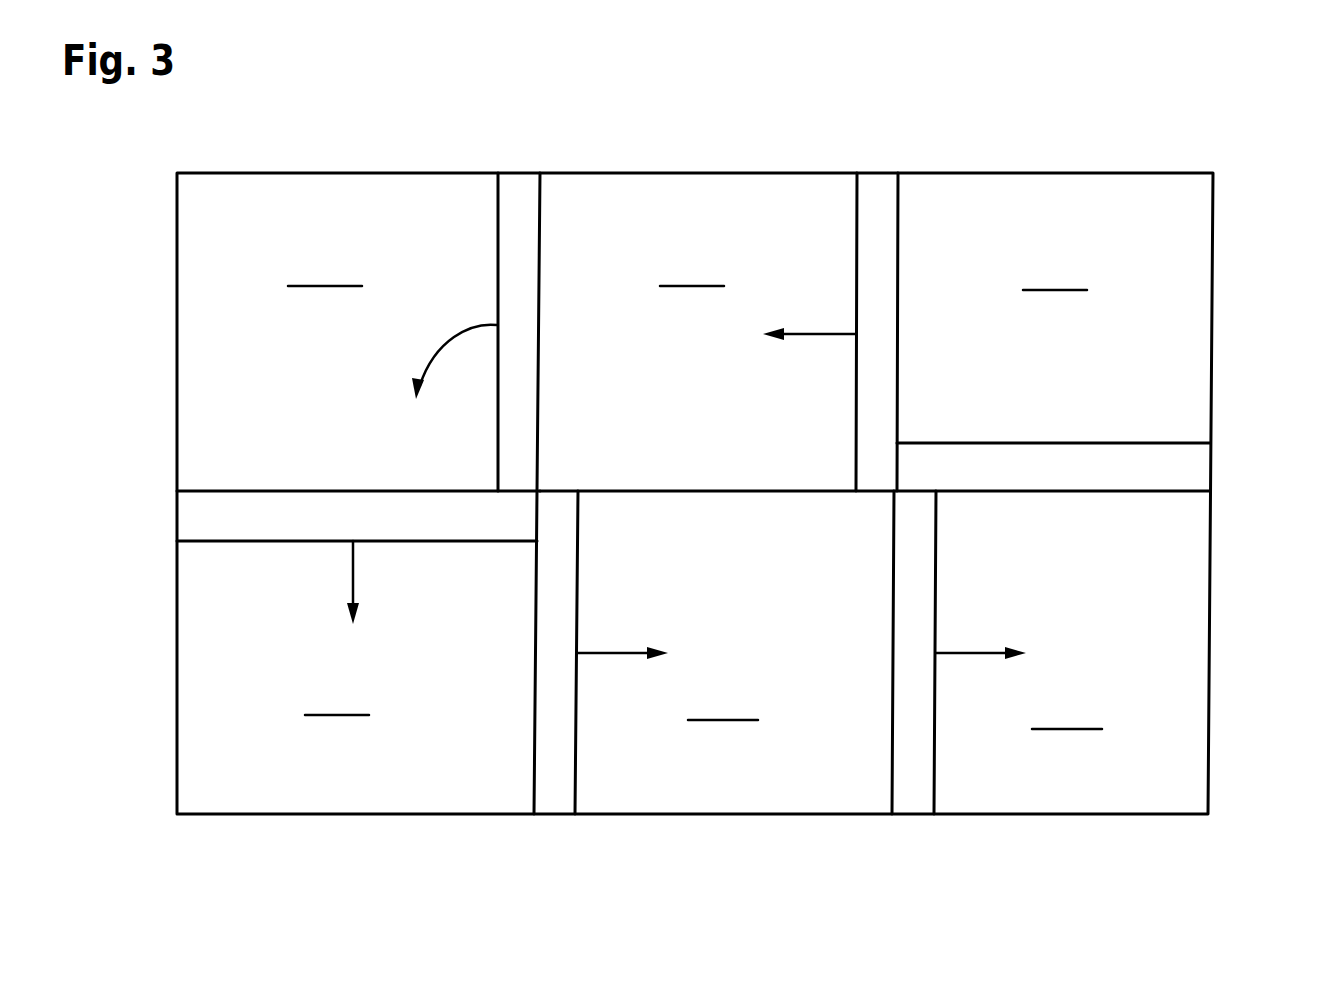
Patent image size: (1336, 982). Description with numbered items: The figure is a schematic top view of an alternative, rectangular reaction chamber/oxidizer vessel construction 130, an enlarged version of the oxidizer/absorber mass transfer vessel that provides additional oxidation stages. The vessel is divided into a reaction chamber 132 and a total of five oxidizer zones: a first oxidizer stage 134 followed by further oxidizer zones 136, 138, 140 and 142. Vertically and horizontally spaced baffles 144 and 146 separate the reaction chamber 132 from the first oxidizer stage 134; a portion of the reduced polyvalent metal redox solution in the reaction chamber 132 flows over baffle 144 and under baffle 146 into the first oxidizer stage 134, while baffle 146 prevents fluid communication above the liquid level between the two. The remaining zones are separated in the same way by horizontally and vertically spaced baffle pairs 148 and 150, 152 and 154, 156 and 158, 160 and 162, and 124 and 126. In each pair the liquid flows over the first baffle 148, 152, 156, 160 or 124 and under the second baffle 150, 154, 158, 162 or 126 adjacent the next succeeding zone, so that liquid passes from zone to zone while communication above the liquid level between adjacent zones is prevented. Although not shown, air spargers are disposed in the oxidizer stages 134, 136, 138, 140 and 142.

The reaction chamber/oxidizer vessel construction 130 is at (1224, 296).
The reaction chamber 132 is at (1102, 190).
The first oxidizer stage 134 is at (686, 185).
The oxidizer zone 136 is at (320, 182).
The oxidizer zone 138 is at (190, 761).
The oxidizer zone 140 is at (760, 788).
The oxidizer zone 142 is at (1123, 778).
The baffle 144 is at (900, 210).
The baffle 146 is at (855, 197).
The baffle 148 is at (543, 200).
The baffle 150 is at (497, 193).
The baffle 152 is at (199, 490).
The baffle 154 is at (205, 541).
The baffle 156 is at (533, 790).
The baffle 158 is at (576, 790).
The baffle 160 is at (892, 778).
The baffle 162 is at (934, 785).
The baffle 124 is at (1163, 492).
The baffle 126 is at (1167, 443).